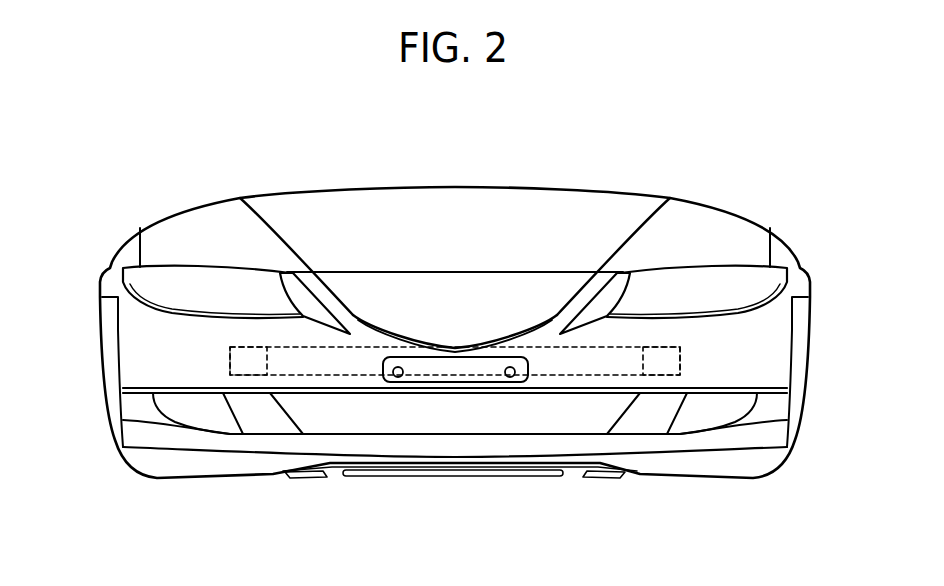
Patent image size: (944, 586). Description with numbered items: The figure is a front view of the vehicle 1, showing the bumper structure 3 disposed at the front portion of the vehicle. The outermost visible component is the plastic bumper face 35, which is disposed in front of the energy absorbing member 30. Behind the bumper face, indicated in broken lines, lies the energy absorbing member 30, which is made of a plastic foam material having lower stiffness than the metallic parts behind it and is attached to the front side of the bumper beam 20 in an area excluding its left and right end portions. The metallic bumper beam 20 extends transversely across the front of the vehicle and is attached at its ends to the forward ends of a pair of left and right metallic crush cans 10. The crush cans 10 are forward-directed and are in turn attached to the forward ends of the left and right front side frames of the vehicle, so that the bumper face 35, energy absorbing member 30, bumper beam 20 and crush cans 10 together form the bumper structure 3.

The vehicle 1 is at (771, 191).
The bumper structure 3 is at (766, 357).
The bumper face 35 is at (133, 353).
The energy absorbing member 30 is at (545, 356).
The bumper beam 20 is at (343, 389).
The crush cans 10 is at (270, 357).